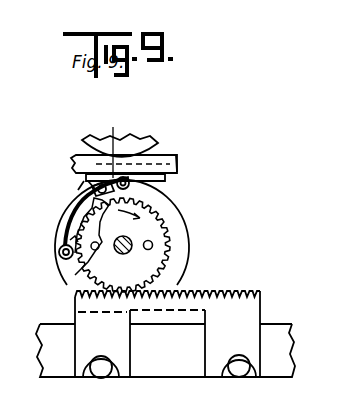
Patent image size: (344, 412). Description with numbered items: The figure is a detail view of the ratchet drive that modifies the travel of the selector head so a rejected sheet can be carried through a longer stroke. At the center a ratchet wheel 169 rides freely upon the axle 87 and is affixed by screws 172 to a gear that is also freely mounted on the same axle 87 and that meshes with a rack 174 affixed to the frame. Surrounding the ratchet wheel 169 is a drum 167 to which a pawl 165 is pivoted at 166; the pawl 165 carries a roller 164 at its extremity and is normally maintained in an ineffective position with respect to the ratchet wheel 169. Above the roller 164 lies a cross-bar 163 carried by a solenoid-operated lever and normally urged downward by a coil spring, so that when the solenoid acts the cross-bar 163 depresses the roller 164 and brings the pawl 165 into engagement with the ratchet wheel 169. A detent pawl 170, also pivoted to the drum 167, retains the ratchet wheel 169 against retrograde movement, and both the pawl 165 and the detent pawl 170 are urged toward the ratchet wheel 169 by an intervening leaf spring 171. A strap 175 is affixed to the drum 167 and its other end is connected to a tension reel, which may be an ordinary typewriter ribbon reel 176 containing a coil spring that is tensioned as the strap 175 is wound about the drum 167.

The axle 87 is at (122, 255).
The cross-bar 163 is at (173, 154).
The roller 164 is at (131, 179).
The pawl 165 is at (113, 144).
The pivot 166 is at (93, 186).
The drum 167 is at (189, 235).
The ratchet wheel 169 is at (67, 227).
The detent pawl 170 is at (60, 250).
The leaf spring 171 is at (71, 205).
The screws 172 is at (152, 247).
The rack 174 is at (233, 289).
The strap 175 is at (178, 164).
The typewriter ribbon reel 176 is at (148, 140).